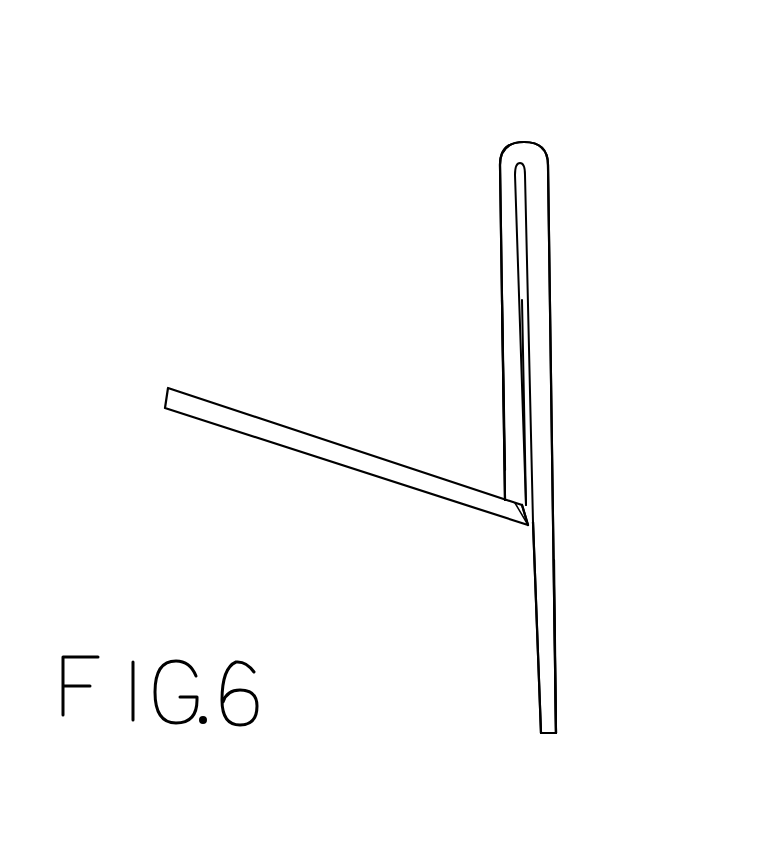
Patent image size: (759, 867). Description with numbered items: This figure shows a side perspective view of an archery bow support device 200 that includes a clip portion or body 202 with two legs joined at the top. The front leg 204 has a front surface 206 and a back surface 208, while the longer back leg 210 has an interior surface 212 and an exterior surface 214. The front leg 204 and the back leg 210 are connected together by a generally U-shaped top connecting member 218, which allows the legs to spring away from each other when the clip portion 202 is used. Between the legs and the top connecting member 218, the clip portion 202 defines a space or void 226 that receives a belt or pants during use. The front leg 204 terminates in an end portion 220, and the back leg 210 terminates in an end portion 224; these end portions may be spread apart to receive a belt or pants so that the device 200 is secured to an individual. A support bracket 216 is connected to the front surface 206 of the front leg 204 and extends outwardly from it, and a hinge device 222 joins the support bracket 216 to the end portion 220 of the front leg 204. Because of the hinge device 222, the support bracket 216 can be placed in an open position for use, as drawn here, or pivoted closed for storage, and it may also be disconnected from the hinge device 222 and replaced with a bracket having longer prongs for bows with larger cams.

The clip assembly 200 is at (283, 118).
The clip 202 is at (628, 172).
The first leg 204 is at (462, 278).
The first leg outer surface 206 is at (503, 352).
The slot 208 is at (523, 288).
The second leg 210 is at (590, 444).
The lower portion of second leg 212 is at (537, 613).
The outer surface of second leg 214 is at (555, 573).
The rod 216 is at (285, 374).
The bend 218 is at (518, 122).
The rod end 220 is at (508, 502).
The engagement point 222 is at (517, 522).
The free end 224 is at (547, 733).
The inner surface 226 is at (524, 395).